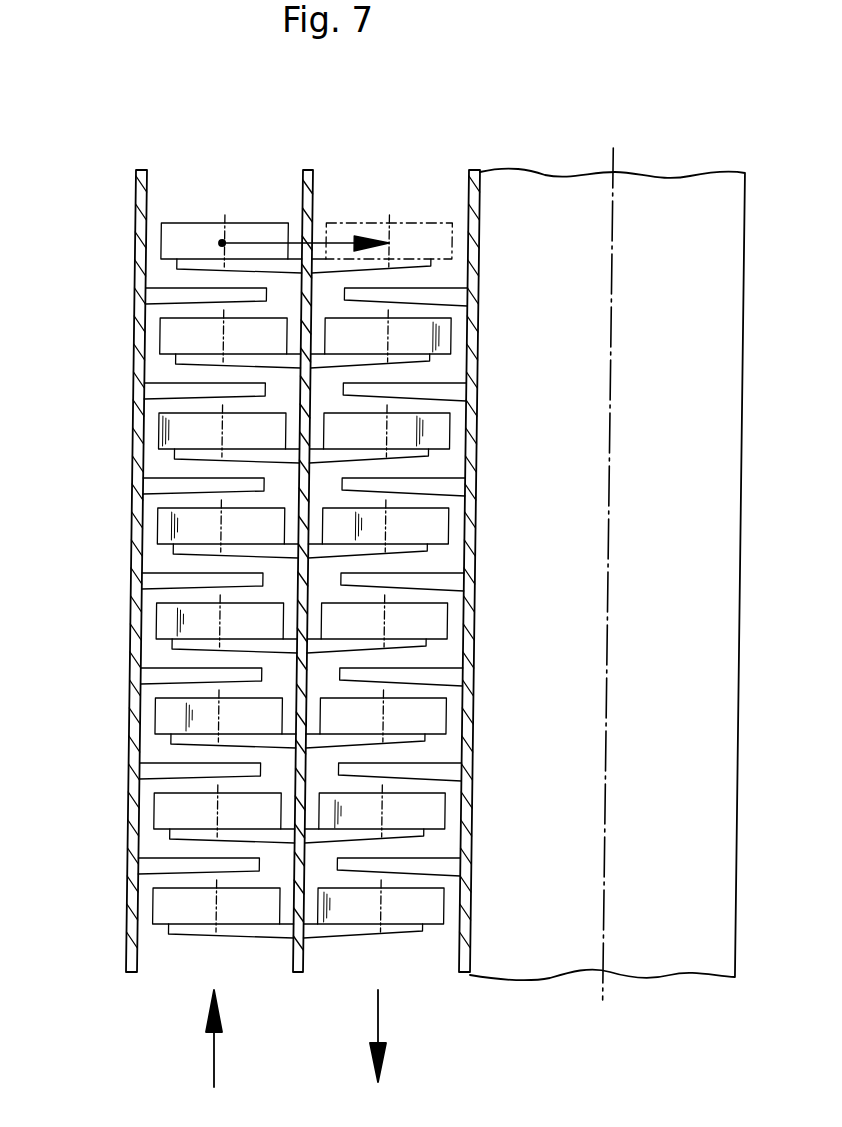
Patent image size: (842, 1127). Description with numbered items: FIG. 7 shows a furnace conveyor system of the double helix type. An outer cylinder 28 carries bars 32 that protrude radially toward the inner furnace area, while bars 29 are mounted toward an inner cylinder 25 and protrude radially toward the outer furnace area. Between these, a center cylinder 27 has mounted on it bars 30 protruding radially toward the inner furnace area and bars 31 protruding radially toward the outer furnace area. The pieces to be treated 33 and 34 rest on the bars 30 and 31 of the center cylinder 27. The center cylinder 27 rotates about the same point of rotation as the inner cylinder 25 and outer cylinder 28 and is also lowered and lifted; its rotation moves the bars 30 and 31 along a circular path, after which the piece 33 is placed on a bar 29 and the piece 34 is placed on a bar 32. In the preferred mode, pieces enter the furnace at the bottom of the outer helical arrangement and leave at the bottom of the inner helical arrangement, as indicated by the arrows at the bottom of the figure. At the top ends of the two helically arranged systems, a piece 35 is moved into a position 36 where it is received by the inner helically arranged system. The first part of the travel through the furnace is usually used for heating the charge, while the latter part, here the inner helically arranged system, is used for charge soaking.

The inner cylinder 25 is at (473, 862).
The center cylinder 27 is at (308, 381).
The outer cylinder 28 is at (130, 853).
The bars 29 is at (453, 677).
The bars 30 is at (370, 456).
The bars 31 is at (248, 457).
The bars 32 is at (160, 672).
The piece to be treated 33 is at (418, 430).
The piece to be treated 34 is at (165, 423).
The piece 35 is at (192, 236).
The position 36 is at (427, 236).